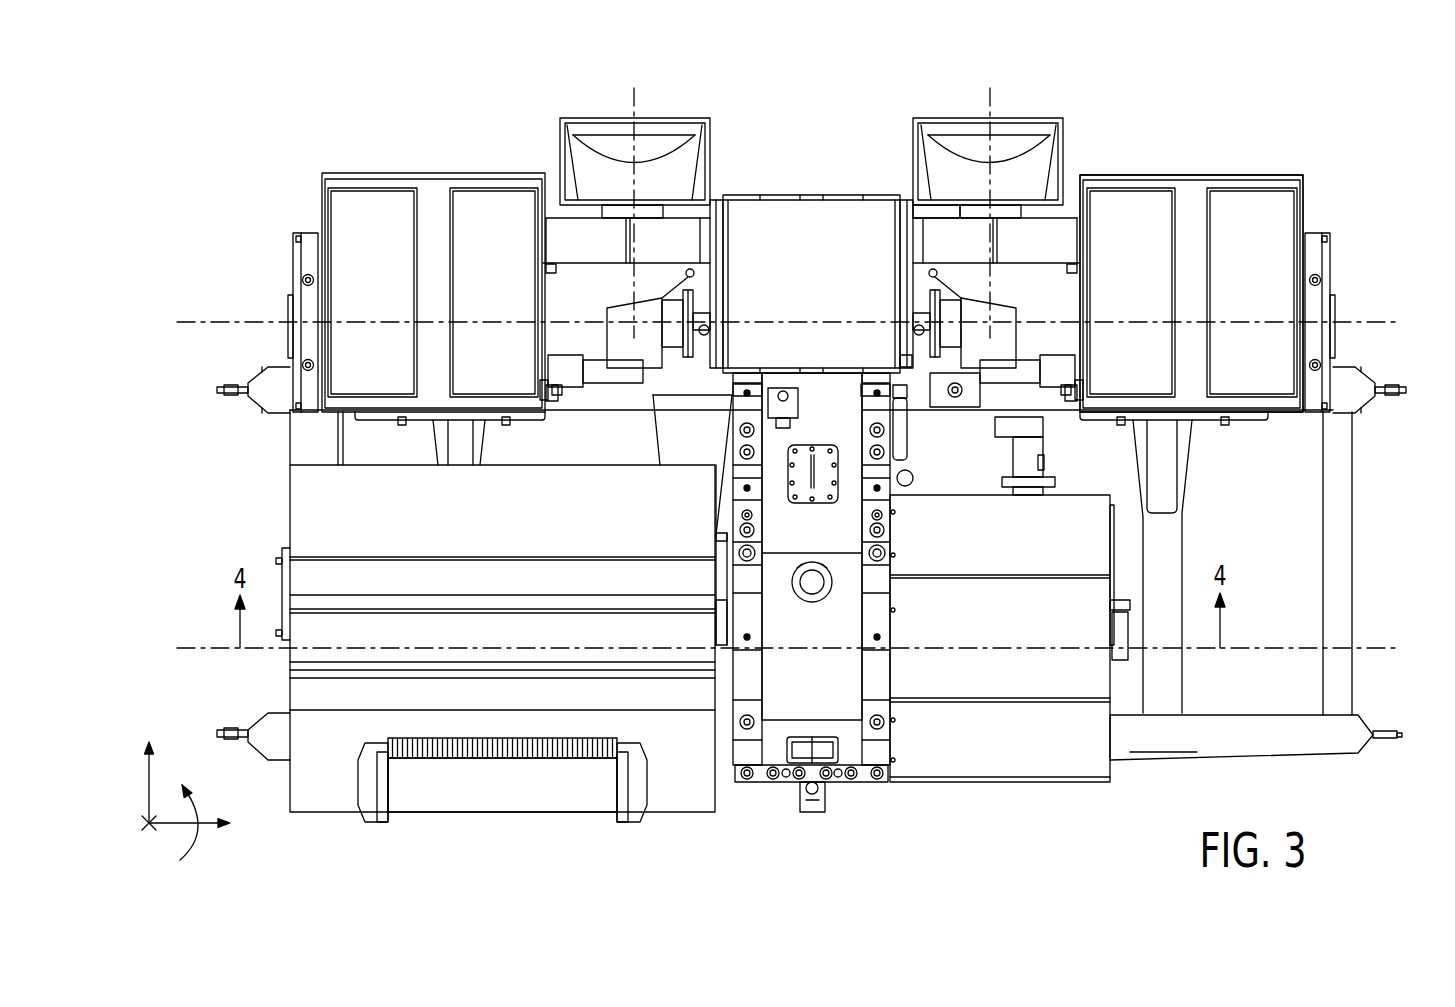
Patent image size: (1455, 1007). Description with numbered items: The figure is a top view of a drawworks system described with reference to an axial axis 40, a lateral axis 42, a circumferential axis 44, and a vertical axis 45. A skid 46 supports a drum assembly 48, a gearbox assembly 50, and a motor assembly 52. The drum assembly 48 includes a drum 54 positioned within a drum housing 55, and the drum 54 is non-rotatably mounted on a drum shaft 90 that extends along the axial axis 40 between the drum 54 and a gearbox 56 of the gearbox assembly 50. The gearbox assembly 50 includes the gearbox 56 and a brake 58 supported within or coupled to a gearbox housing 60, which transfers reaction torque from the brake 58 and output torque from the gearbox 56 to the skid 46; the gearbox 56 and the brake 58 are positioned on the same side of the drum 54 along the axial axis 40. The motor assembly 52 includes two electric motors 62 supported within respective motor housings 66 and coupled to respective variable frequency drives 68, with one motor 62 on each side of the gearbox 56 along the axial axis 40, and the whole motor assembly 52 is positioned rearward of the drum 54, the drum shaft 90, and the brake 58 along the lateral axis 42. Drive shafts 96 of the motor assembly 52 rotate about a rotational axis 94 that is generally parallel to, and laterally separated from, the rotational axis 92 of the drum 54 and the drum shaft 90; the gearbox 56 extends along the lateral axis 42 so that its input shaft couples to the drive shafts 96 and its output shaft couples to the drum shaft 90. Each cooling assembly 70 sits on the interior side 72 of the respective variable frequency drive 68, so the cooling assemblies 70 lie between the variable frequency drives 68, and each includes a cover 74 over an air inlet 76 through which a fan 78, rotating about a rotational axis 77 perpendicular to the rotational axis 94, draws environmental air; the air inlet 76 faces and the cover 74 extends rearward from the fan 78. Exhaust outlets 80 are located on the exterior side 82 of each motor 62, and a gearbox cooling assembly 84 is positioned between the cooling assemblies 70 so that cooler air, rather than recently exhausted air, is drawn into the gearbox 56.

The axial axis 40 is at (175, 807).
The lateral axis 42 is at (146, 787).
The circumferential axis 44 is at (180, 858).
The vertical axis 45 is at (142, 826).
The skid 46 is at (1340, 676).
The drum assembly 48 is at (502, 807).
The gearbox assembly 50 is at (828, 621).
The motor assembly 52 is at (1137, 143).
The drum 54 is at (558, 755).
The drum housing 55 is at (290, 510).
The gearbox 56 is at (807, 692).
The brake 58 is at (1043, 785).
The gearbox housing 60 is at (837, 690).
The electric motor 62 is at (300, 334).
The motor housing 66 is at (318, 365).
The variable frequency drive 68 is at (812, 292).
The cooling assembly 70 is at (812, 121).
The interior side 72 is at (548, 306).
The cover 74 is at (668, 180).
The air inlet 76 is at (813, 142).
The rotational axis 77 is at (638, 250).
The fan 78 is at (578, 242).
The exhaust outlet 80 is at (305, 278).
The exterior side 82 is at (810, 301).
The gearbox cooling assembly 84 is at (805, 232).
The drum shaft 90 is at (715, 638).
The rotational axis 92 is at (205, 650).
The rotational axis 94 is at (1128, 330).
The drive shaft 96 is at (703, 307).